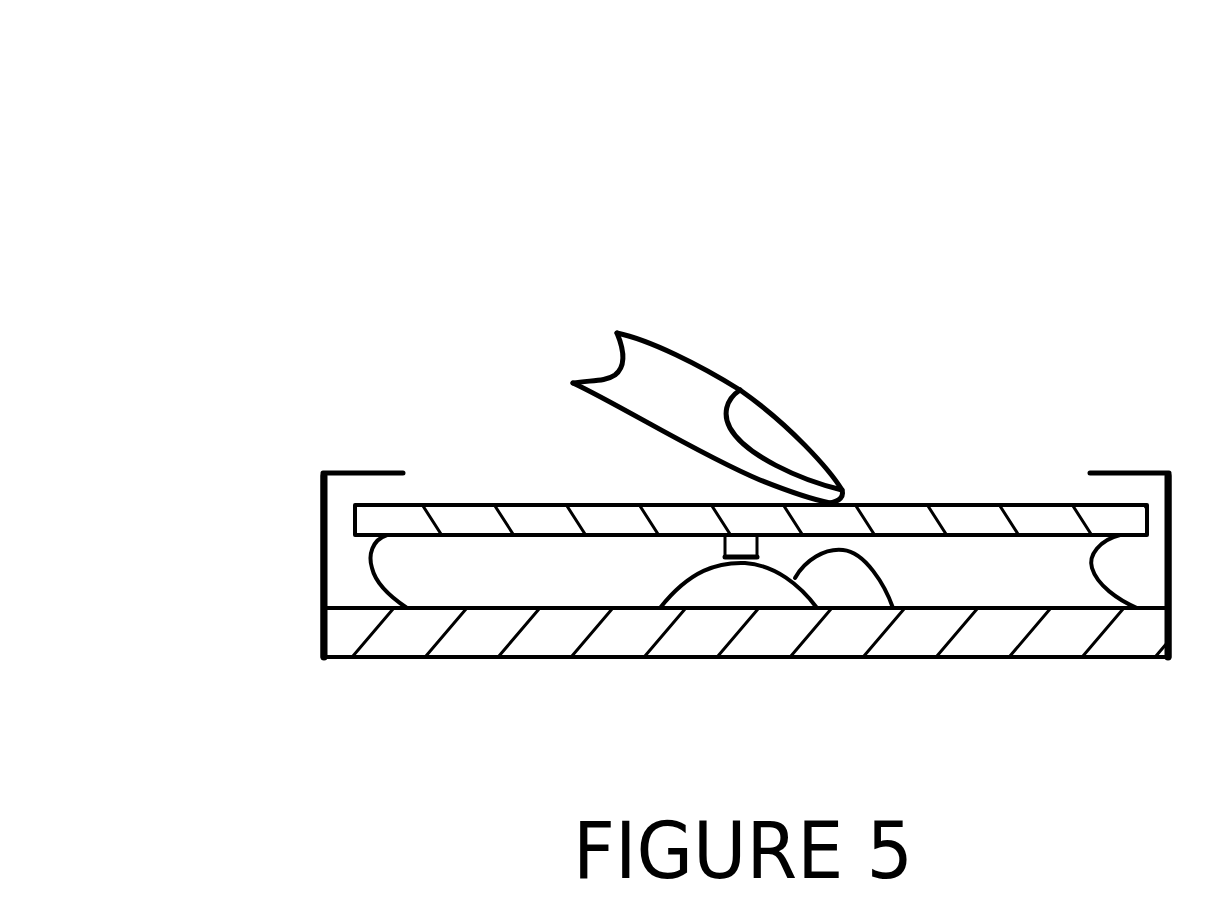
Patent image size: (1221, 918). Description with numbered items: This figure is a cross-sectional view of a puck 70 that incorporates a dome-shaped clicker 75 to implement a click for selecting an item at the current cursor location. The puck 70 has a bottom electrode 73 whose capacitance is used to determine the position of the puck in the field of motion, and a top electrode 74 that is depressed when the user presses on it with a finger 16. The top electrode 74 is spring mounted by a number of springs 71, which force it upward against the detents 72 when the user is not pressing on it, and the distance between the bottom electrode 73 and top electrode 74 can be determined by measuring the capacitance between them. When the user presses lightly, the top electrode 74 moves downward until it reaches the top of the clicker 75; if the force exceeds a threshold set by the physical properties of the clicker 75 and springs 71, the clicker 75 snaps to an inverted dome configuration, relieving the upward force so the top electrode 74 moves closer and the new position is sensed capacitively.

The puck 70 is at (318, 212).
The finger 16 is at (667, 347).
The springs 71 is at (368, 576).
The detents 72 is at (354, 472).
The bottom electrode 73 is at (380, 640).
The top electrode 74 is at (1000, 512).
The clicker 75 is at (893, 608).